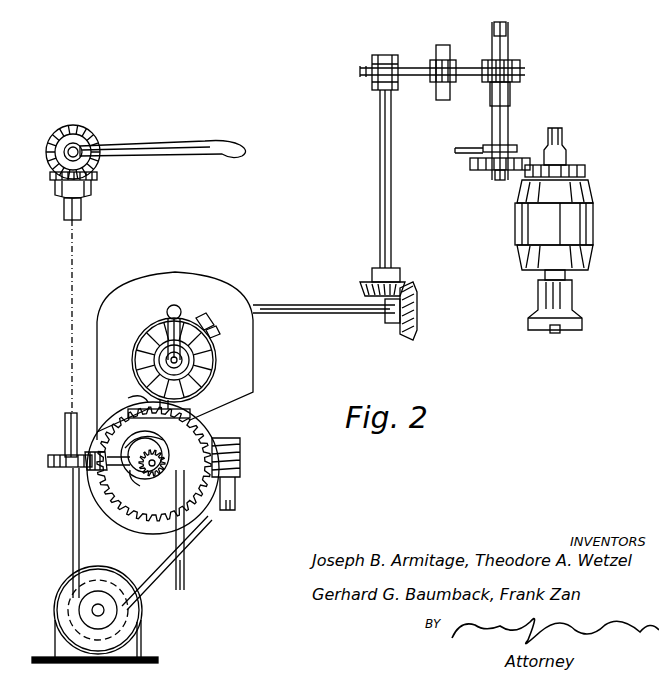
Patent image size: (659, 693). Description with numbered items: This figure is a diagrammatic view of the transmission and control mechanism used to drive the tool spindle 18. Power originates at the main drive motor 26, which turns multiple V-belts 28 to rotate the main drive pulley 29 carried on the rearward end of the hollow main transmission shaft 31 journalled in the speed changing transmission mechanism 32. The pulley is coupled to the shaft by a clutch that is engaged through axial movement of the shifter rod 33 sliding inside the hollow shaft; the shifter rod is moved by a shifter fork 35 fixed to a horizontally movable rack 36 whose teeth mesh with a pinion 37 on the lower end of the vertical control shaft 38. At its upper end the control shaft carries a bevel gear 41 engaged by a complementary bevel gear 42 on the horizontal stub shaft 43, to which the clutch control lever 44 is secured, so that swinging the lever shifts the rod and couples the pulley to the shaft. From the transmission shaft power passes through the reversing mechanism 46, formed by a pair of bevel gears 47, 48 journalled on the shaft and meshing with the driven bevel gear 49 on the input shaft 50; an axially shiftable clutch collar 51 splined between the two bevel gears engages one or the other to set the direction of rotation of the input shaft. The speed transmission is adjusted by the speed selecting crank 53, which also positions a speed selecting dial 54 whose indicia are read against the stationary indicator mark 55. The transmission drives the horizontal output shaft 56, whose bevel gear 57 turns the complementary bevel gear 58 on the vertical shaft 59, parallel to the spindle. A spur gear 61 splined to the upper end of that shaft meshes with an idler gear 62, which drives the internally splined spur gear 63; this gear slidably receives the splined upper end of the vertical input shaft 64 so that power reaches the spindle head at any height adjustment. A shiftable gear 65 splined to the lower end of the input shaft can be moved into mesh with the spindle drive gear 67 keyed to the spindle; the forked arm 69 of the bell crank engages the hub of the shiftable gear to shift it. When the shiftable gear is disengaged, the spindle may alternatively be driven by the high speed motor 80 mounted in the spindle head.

The tool spindle 18 is at (582, 318).
The main drive motor 26 is at (130, 612).
The multiple V-belts 28 is at (73, 563).
The main drive pulley 29 is at (106, 506).
The hollow main transmission shaft 31 is at (214, 424).
The speed changing transmission mechanism 32 is at (210, 284).
The shifter rod 33 is at (175, 490).
The shifter fork 35 is at (112, 463).
The rack 36 is at (88, 464).
The pinion 37 is at (50, 456).
The vertical control shaft 38 is at (82, 211).
The bevel gear 41 is at (98, 172).
The bevel gear 42 is at (92, 138).
The horizontal stub shaft 43 is at (70, 128).
The clutch control lever 44 is at (202, 142).
The reversing mechanism 46 is at (118, 475).
The bevel gear 47 is at (140, 480).
The bevel gear 48 is at (128, 413).
The driven bevel gear 49 is at (130, 398).
The input shaft 50 is at (132, 360).
The clutch collar 51 is at (176, 532).
The speed selecting crank 53 is at (168, 308).
The speed selecting dial 54 is at (214, 334).
The stationary indicator mark 55 is at (212, 321).
The horizontal output shaft 56 is at (273, 314).
The bevel gear 57 is at (402, 330).
The bevel gear 58 is at (364, 287).
The vertical shaft 59 is at (380, 222).
The spur gear 61 is at (360, 71).
The idler gear 62 is at (428, 60).
The spur gear 63 is at (520, 70).
The vertical input shaft 64 is at (510, 114).
The shiftable gear 65 is at (470, 164).
The spindle drive gear 67 is at (570, 172).
The forked arm 69 is at (470, 146).
The high speed motor 80 is at (600, 216).